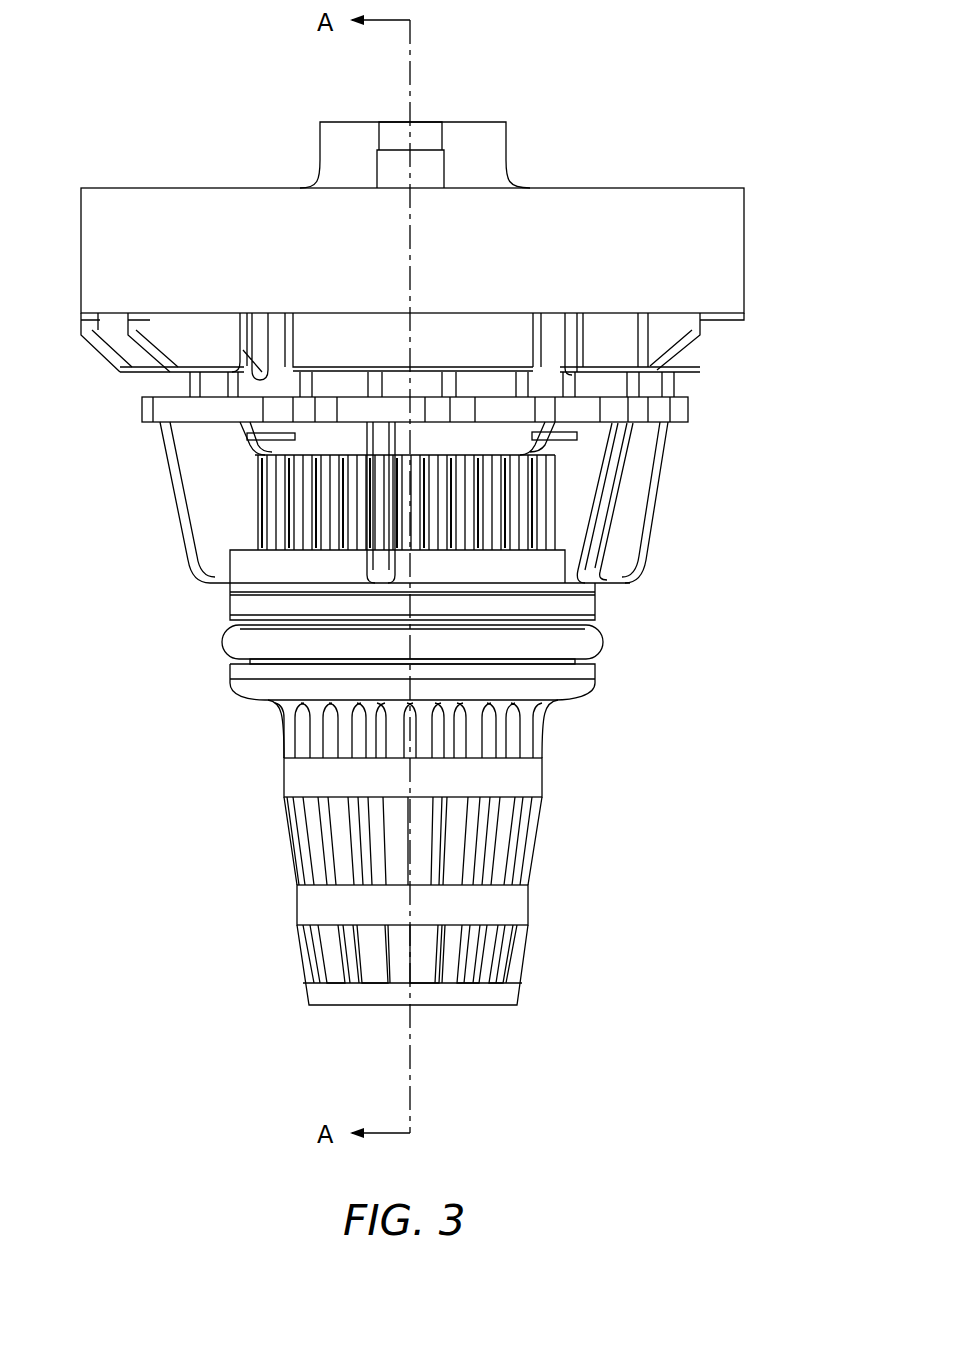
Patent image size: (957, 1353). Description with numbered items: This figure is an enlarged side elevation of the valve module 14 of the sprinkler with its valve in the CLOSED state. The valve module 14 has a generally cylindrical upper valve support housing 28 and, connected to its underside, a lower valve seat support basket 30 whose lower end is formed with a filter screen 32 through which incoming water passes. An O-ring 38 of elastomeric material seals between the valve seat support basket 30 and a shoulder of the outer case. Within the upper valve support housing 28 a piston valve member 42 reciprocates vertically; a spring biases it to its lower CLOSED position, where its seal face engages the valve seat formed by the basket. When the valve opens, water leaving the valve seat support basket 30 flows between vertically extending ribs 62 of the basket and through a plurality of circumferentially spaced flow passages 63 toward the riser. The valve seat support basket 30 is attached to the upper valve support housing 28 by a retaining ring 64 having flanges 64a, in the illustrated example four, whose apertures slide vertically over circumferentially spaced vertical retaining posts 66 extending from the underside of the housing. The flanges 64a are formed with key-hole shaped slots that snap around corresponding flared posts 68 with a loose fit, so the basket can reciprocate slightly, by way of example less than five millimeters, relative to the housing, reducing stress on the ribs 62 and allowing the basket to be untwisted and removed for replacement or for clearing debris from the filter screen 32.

The valve module 14 is at (708, 79).
The upper valve support housing 28 is at (575, 260).
The valve seat support basket 30 is at (652, 565).
The filter screen 32 is at (532, 847).
The O-ring 38 is at (592, 642).
The piston valve member 42 is at (563, 482).
The ribs 62 is at (198, 528).
The flow passages 63 is at (200, 323).
The retaining ring 64 is at (663, 412).
The flanges 64a is at (248, 408).
The retaining posts 66 is at (567, 387).
The flared posts 68 is at (247, 440).